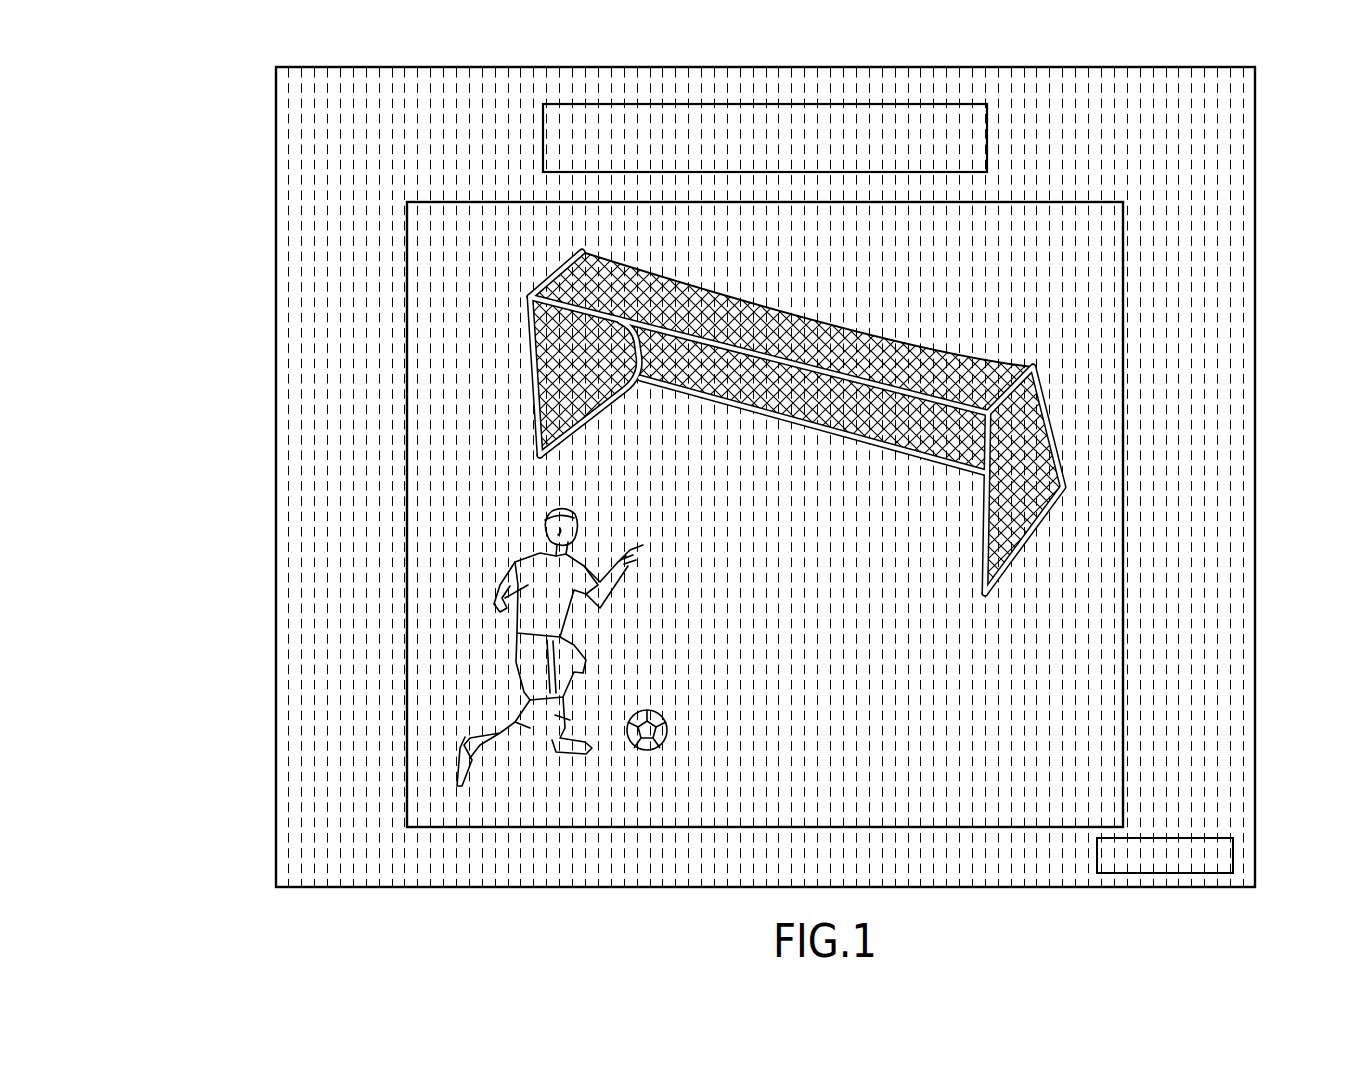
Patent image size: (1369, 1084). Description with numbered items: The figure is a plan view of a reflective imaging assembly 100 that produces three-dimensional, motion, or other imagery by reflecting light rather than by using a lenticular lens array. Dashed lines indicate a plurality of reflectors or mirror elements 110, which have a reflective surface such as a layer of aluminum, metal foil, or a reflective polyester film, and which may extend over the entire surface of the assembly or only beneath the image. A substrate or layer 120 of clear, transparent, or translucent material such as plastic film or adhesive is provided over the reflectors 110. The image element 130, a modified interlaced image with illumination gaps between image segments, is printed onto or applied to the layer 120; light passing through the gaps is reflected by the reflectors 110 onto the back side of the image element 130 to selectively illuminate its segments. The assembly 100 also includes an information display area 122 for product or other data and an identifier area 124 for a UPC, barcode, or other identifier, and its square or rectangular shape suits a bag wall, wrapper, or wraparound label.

The reflective imaging assembly 100 is at (122, 128).
The reflectors or mirror elements 110 is at (328, 116).
The substrate or layer 120 is at (276, 350).
The graphics or information display area 122 is at (987, 140).
The product identifier area 124 is at (1233, 852).
The image element 130 is at (407, 470).